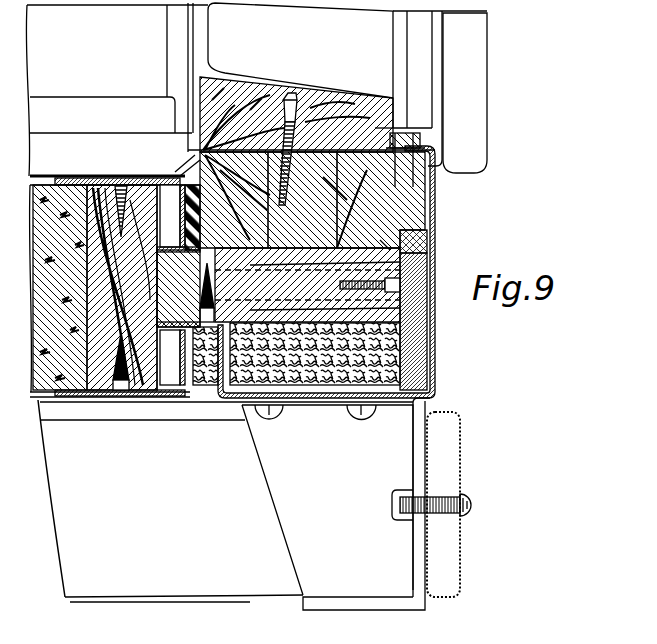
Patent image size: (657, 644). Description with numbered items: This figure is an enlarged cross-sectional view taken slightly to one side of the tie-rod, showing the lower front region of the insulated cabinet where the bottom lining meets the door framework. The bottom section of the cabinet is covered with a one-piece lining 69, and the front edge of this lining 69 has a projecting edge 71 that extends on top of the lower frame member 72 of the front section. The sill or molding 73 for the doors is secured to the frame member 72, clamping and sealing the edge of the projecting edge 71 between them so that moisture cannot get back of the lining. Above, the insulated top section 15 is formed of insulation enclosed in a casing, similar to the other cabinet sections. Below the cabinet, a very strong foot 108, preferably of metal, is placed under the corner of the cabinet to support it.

The top section 15 is at (300, 65).
The sill or molding 73 is at (200, 88).
The projecting edge 71 is at (196, 150).
The lower frame member 72 is at (178, 174).
The one-piece lining 69 is at (50, 176).
The foot 108 is at (262, 470).